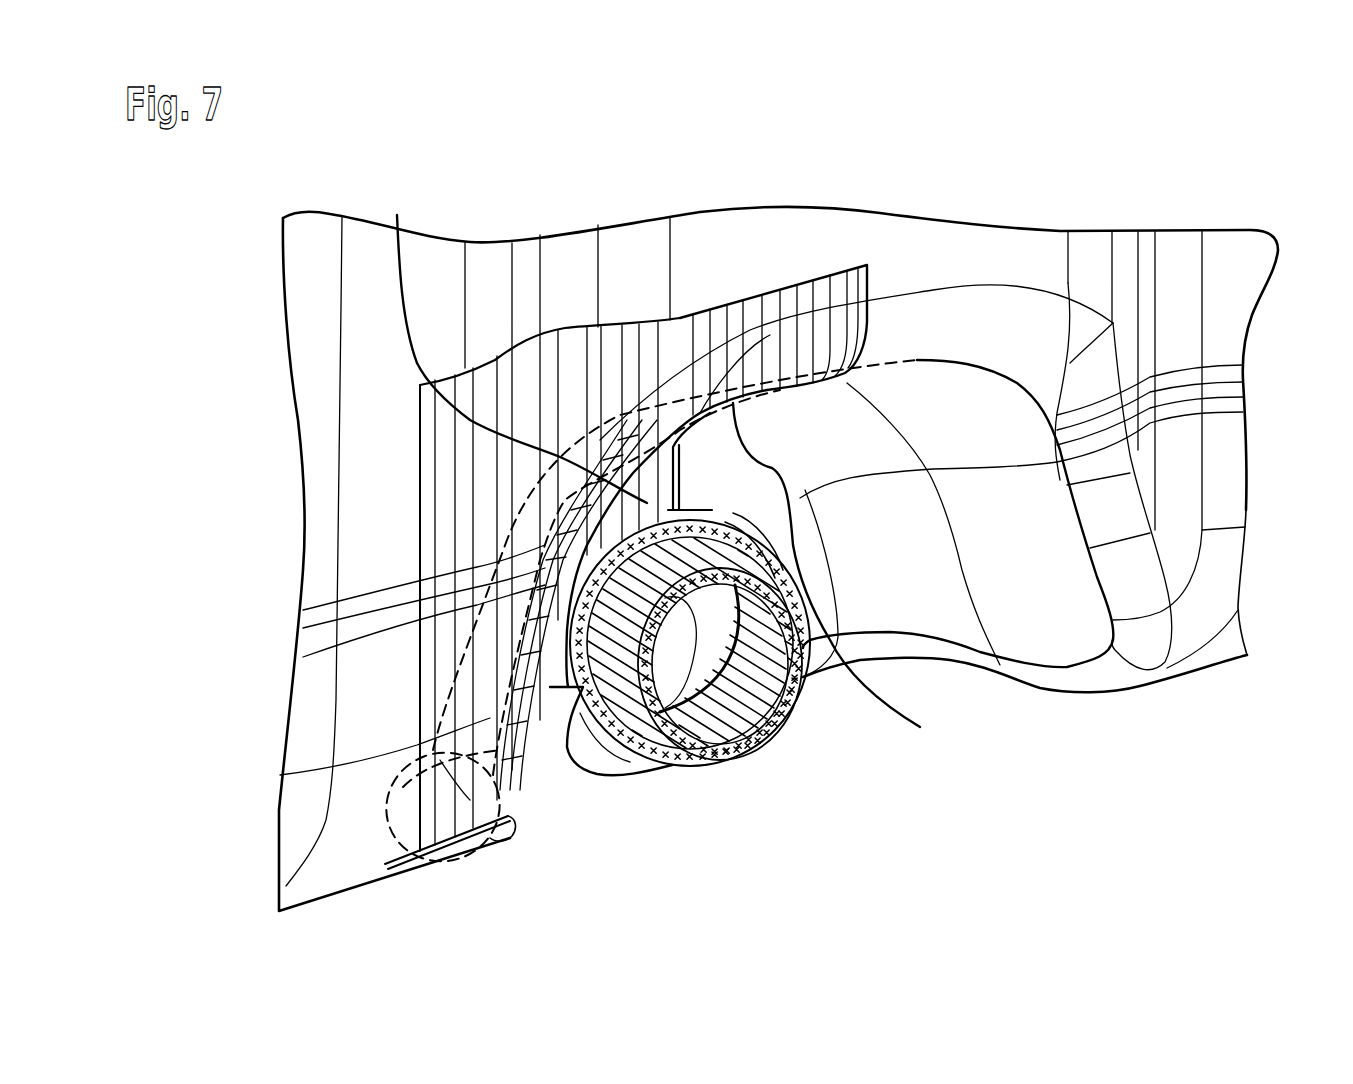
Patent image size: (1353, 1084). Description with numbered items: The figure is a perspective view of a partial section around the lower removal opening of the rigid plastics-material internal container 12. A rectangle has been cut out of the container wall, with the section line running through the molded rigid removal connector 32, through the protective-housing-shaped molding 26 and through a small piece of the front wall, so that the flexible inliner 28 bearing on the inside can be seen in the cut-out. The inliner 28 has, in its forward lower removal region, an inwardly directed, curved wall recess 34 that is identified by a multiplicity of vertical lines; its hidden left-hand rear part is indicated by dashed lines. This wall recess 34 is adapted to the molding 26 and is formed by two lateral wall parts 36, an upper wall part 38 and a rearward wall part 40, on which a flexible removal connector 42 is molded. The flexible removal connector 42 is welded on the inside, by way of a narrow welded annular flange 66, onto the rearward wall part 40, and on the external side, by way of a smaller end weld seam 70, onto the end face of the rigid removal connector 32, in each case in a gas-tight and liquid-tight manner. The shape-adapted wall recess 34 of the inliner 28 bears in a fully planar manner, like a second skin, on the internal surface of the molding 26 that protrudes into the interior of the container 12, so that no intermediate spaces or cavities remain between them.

The rigid plastics-material internal container 12 is at (1008, 248).
The protective-housing-shaped molding 26 is at (925, 423).
The flexible inliner 28 is at (487, 476).
The rigid removal connector 32 is at (843, 575).
The wall recess 34 is at (517, 513).
The lateral wall parts 36 is at (513, 595).
The upper wall part 38 is at (731, 390).
The rearward wall part 40 is at (397, 215).
The flexible removal connector 42 is at (687, 620).
The welded annular flange 66 is at (575, 690).
The end weld seam 70 is at (790, 695).